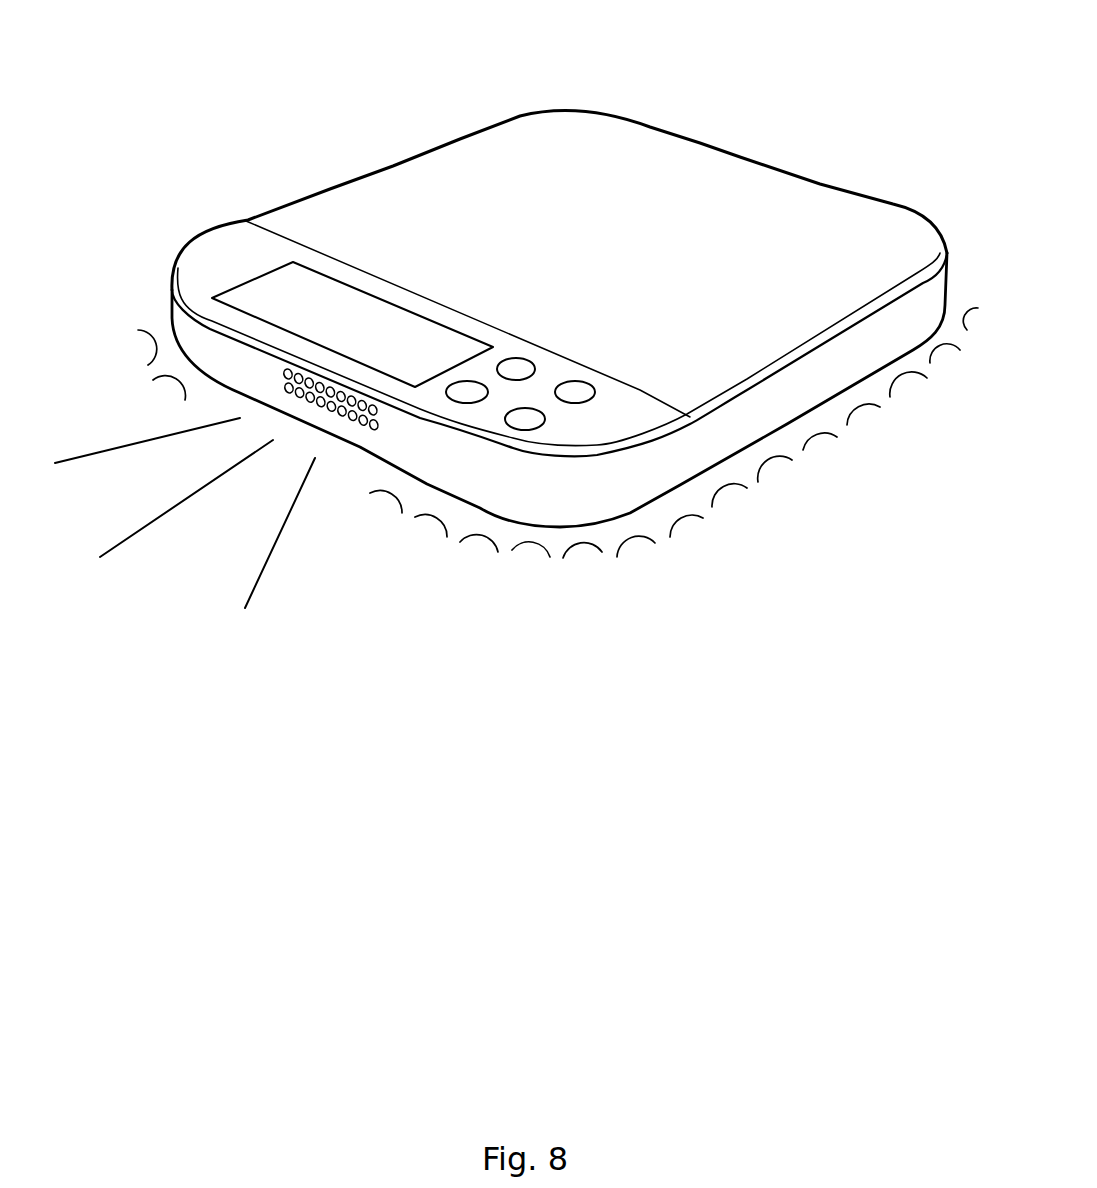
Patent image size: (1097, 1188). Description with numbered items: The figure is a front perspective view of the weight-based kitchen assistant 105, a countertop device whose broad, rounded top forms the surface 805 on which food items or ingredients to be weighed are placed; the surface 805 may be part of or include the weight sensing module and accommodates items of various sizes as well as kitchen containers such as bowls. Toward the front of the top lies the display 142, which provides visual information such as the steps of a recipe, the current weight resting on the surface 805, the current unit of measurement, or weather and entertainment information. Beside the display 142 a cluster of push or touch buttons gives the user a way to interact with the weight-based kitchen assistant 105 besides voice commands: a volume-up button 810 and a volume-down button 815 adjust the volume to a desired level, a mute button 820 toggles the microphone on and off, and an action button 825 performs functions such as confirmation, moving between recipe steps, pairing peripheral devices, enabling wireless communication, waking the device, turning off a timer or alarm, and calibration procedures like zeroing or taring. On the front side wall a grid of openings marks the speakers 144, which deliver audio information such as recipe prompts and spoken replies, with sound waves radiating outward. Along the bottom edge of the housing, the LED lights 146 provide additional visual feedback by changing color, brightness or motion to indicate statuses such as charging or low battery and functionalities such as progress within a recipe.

The weight-based kitchen assistant 105 is at (300, 28).
The display 142 is at (250, 280).
The speakers 144 is at (337, 428).
The LED lights 146 is at (828, 440).
The surface 805 is at (677, 175).
The volume-up button 810 is at (515, 358).
The volume-down button 815 is at (587, 382).
The mute button 820 is at (452, 400).
The action button 825 is at (545, 423).